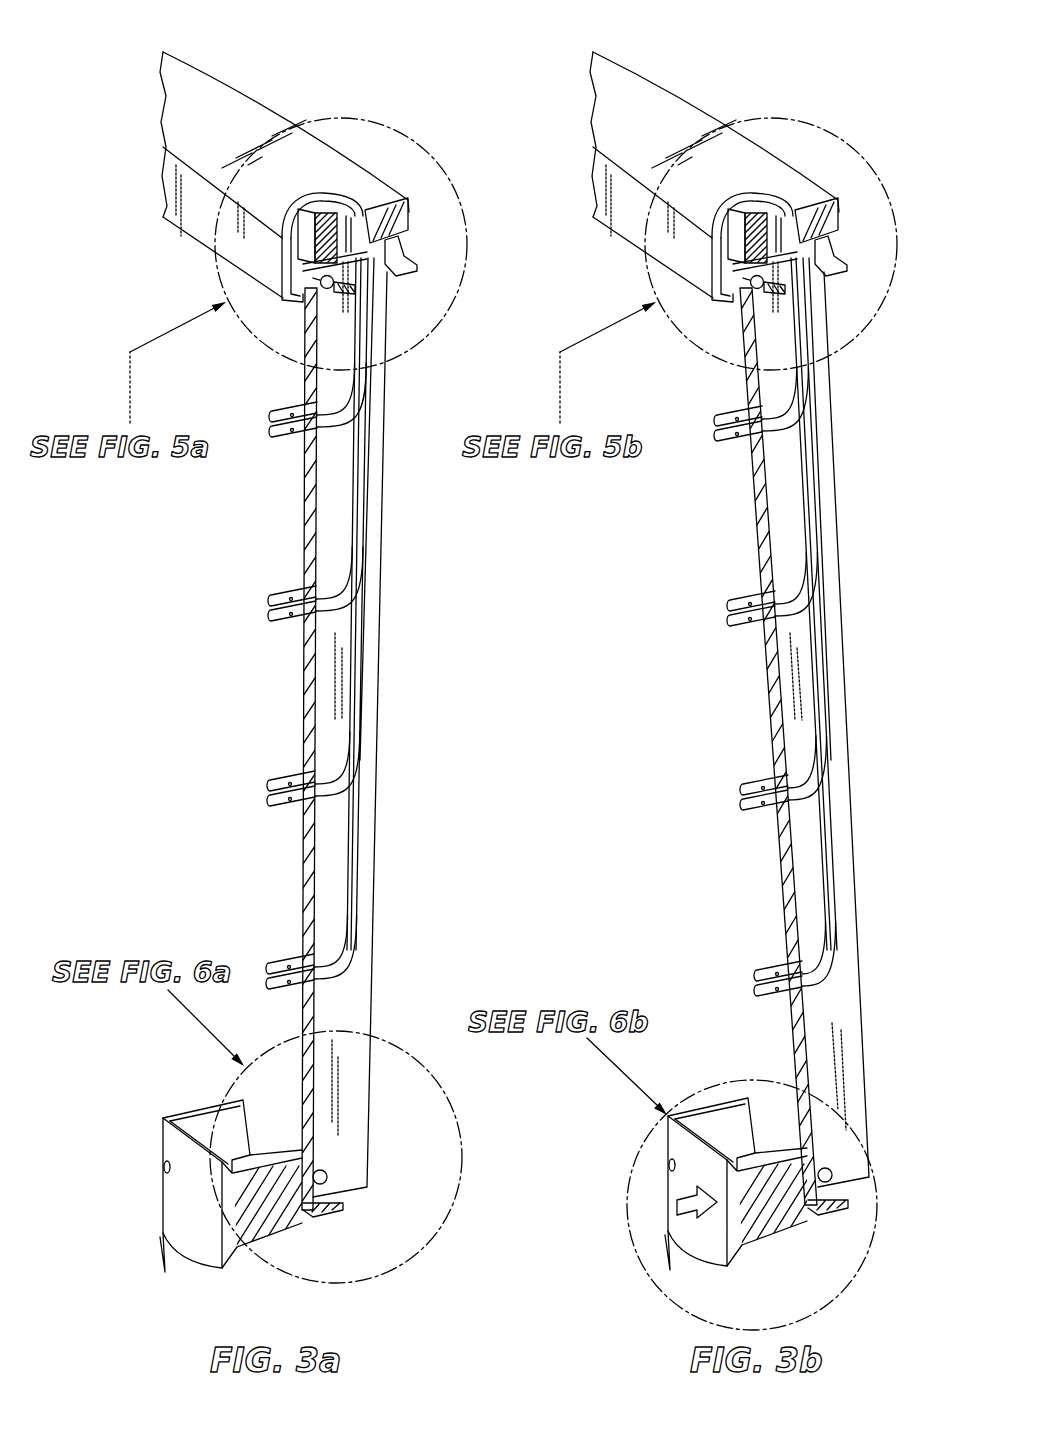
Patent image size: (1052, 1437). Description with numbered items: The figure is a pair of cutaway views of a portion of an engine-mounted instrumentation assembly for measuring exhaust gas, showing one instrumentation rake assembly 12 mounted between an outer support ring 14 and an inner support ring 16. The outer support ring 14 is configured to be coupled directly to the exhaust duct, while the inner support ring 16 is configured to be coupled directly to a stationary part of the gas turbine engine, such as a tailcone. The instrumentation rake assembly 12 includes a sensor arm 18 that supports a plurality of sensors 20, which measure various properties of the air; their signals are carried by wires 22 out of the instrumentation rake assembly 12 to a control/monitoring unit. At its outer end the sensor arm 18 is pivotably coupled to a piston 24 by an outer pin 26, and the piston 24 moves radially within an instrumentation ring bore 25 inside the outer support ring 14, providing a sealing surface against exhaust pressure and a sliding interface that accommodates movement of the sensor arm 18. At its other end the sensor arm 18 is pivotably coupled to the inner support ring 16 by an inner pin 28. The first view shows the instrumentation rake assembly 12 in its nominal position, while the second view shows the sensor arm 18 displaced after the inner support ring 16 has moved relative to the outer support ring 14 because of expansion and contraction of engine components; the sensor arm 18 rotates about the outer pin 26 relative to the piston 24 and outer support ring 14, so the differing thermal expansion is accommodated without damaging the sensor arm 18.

In FIG. 3a, the instrumentation rake assembly 12 is at (410, 665).
In FIG. 3b, the instrumentation rake assembly 12 is at (864, 659).
In FIG. 3a, the outer support ring 14 is at (238, 104).
In FIG. 3b, the outer support ring 14 is at (668, 104).
In FIG. 3a, the inner support ring 16 is at (185, 1204).
In FIG. 3b, the inner support ring 16 is at (670, 1187).
In FIG. 3a, the sensor arm 18 is at (386, 830).
In FIG. 3b, the sensor arm 18 is at (866, 920).
In FIG. 3a, the sensors 20 is at (278, 593).
In FIG. 3b, the sensors 20 is at (735, 598).
In FIG. 3a, the wires 22 is at (386, 527).
In FIG. 3b, the wires 22 is at (842, 513).
In FIG. 3a, the piston 24 is at (324, 192).
In FIG. 3b, the piston 24 is at (754, 192).
In FIG. 3a, the instrumentation ring bore 25 is at (399, 211).
In FIG. 3b, the instrumentation ring bore 25 is at (829, 211).
In FIG. 3a, the outer pin 26 is at (350, 286).
In FIG. 3b, the outer pin 26 is at (780, 286).
In FIG. 3a, the inner pin 28 is at (340, 1175).
In FIG. 3b, the inner pin 28 is at (849, 1175).